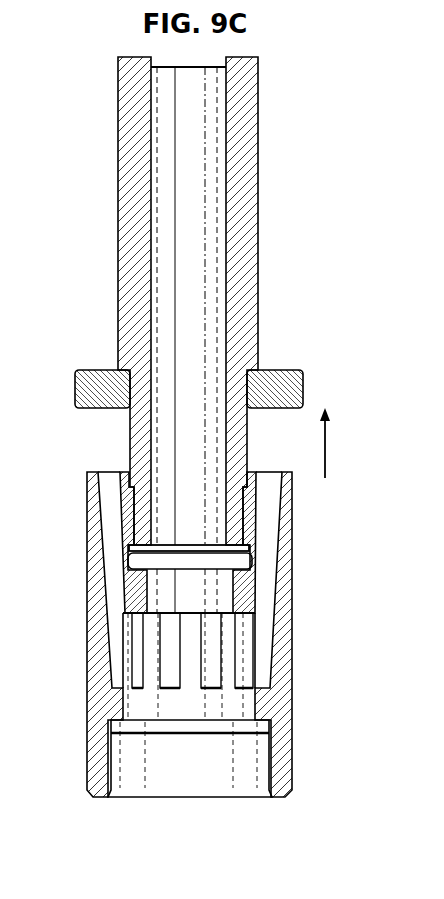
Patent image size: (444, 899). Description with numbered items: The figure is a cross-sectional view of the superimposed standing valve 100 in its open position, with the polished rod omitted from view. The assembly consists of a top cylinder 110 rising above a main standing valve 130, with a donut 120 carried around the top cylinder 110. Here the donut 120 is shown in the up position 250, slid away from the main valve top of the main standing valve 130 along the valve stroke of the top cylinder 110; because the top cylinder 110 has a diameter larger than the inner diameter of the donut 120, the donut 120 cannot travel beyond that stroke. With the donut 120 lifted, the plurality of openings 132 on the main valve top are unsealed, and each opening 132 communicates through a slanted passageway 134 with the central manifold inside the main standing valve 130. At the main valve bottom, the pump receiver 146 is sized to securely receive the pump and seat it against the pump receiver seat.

The superimposed standing valve 100 is at (99, 99).
The top cylinder 110 is at (258, 222).
The donut 120 is at (303, 386).
The main standing valve 130 is at (293, 648).
The plurality of openings 132 is at (108, 471).
The slanted passageway 134 is at (113, 592).
The pump receiver 146 is at (187, 763).
The up position 250 is at (327, 444).